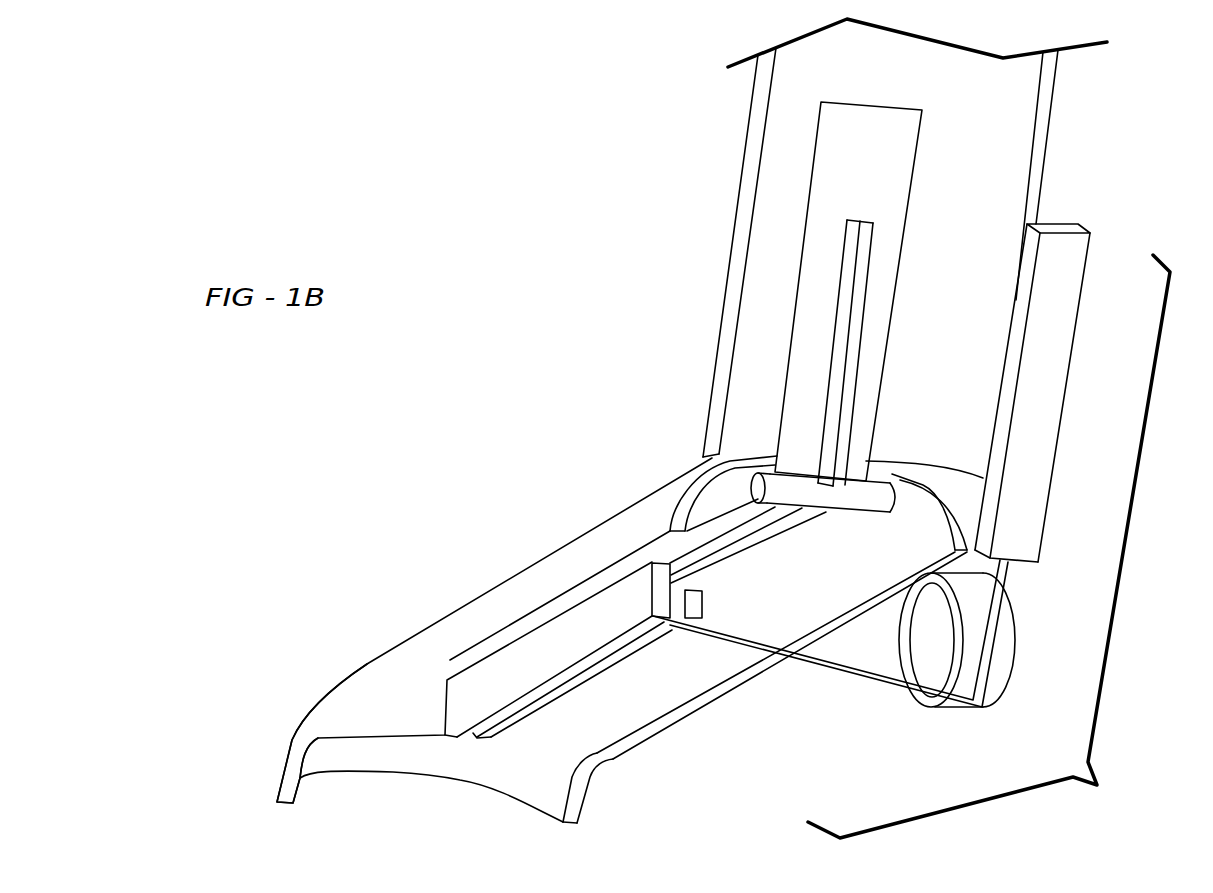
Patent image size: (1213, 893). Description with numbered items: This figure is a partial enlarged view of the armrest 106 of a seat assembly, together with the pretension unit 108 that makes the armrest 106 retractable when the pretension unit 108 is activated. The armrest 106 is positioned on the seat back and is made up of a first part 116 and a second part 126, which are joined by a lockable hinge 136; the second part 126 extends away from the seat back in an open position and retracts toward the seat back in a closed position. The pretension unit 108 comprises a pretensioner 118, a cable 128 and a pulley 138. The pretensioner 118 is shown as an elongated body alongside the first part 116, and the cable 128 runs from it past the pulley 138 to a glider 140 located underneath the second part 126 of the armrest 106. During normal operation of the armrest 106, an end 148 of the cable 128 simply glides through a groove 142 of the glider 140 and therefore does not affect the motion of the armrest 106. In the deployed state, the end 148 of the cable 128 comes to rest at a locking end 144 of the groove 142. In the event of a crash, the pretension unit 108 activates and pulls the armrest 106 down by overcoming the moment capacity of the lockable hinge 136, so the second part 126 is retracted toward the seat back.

The armrest 106 is at (497, 562).
The pretension unit 108 is at (989, 546).
The first part 116 is at (988, 148).
The pretensioner 118 is at (1040, 378).
The second part 126 is at (403, 731).
The cable 128 is at (877, 693).
The lockable hinge 136 is at (752, 488).
The pulley 138 is at (1018, 642).
The glider 140 is at (543, 703).
The groove 142 is at (572, 683).
The locking end 144 is at (700, 595).
The end 148 is at (660, 620).